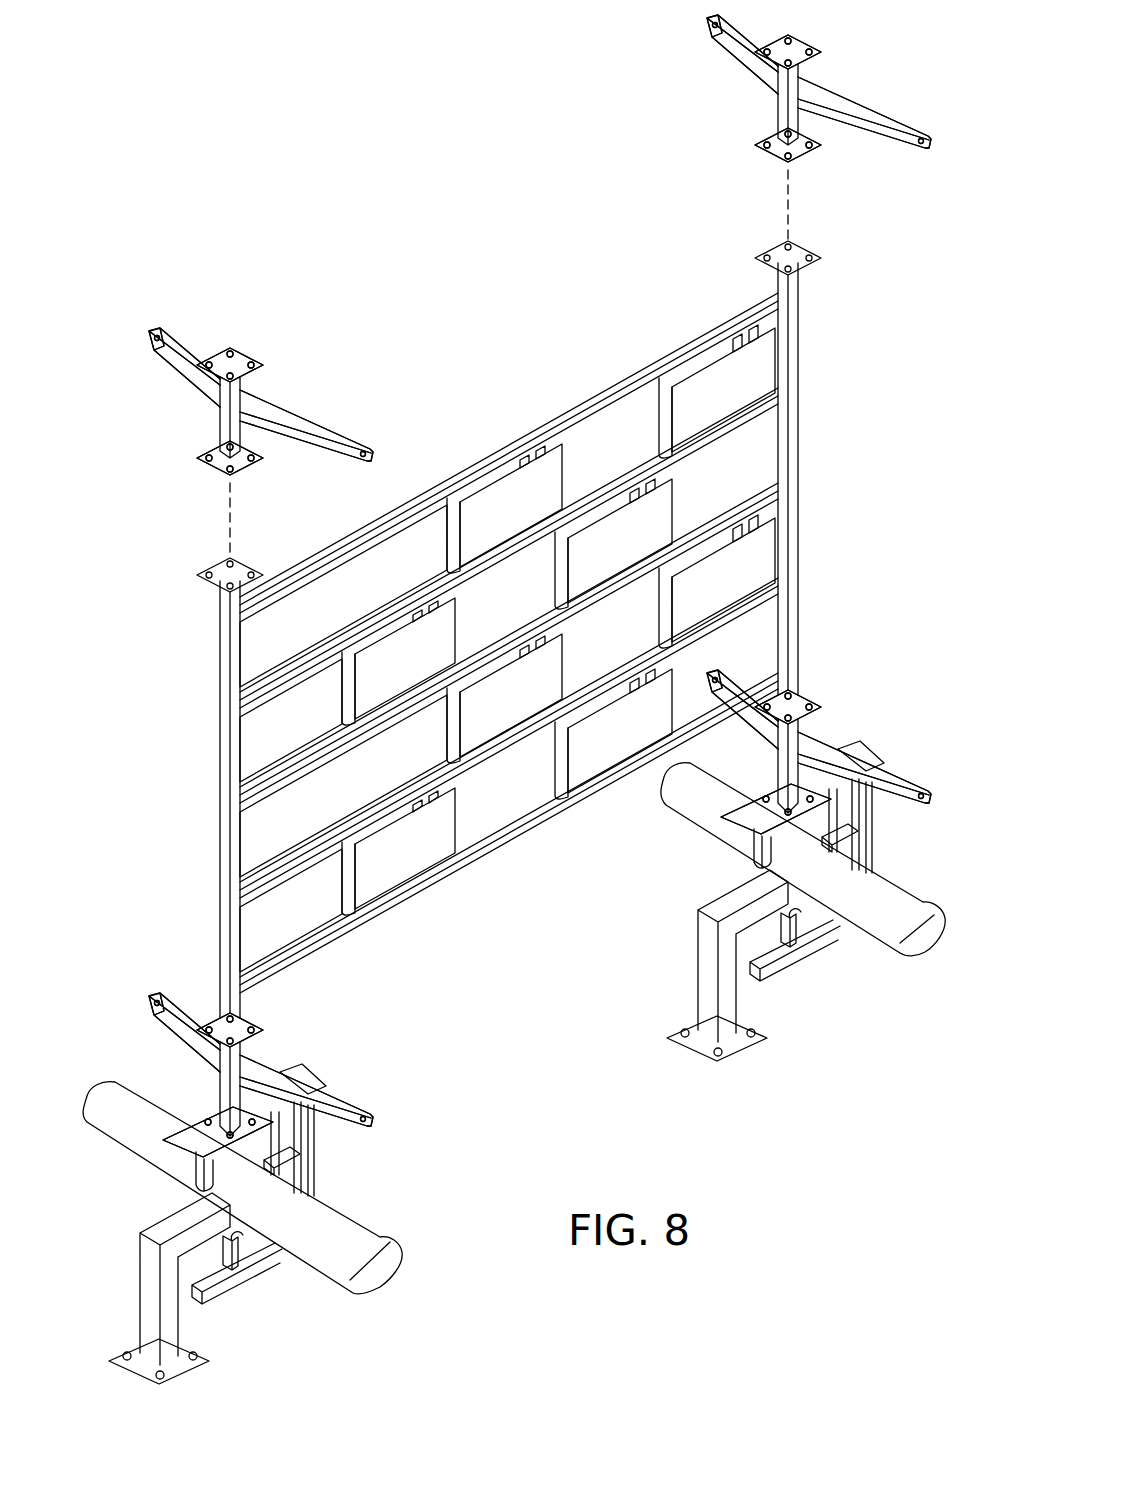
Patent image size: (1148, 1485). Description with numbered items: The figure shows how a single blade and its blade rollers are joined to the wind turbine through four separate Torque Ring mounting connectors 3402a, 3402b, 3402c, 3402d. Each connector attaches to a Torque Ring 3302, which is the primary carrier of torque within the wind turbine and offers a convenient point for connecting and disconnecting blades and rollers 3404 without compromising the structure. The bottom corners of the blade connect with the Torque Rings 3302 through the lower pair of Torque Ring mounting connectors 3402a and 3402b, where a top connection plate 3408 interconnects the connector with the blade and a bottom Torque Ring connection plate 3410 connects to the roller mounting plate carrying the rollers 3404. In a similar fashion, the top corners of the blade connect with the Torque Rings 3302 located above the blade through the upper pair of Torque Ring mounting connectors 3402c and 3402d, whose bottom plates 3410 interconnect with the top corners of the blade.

The Torque Ring 3302 is at (718, 36).
The Torque Ring mounting connector 3402a is at (284, 1046).
The Torque Ring mounting connector 3402b is at (844, 726).
The Torque Ring mounting connector 3402c is at (283, 388).
The Torque Ring mounting connector 3402d is at (834, 75).
The roller 3404 is at (262, 1303).
The top connection plate 3408 is at (238, 362).
The bottom Torque Ring connection plate 3410 is at (767, 152).